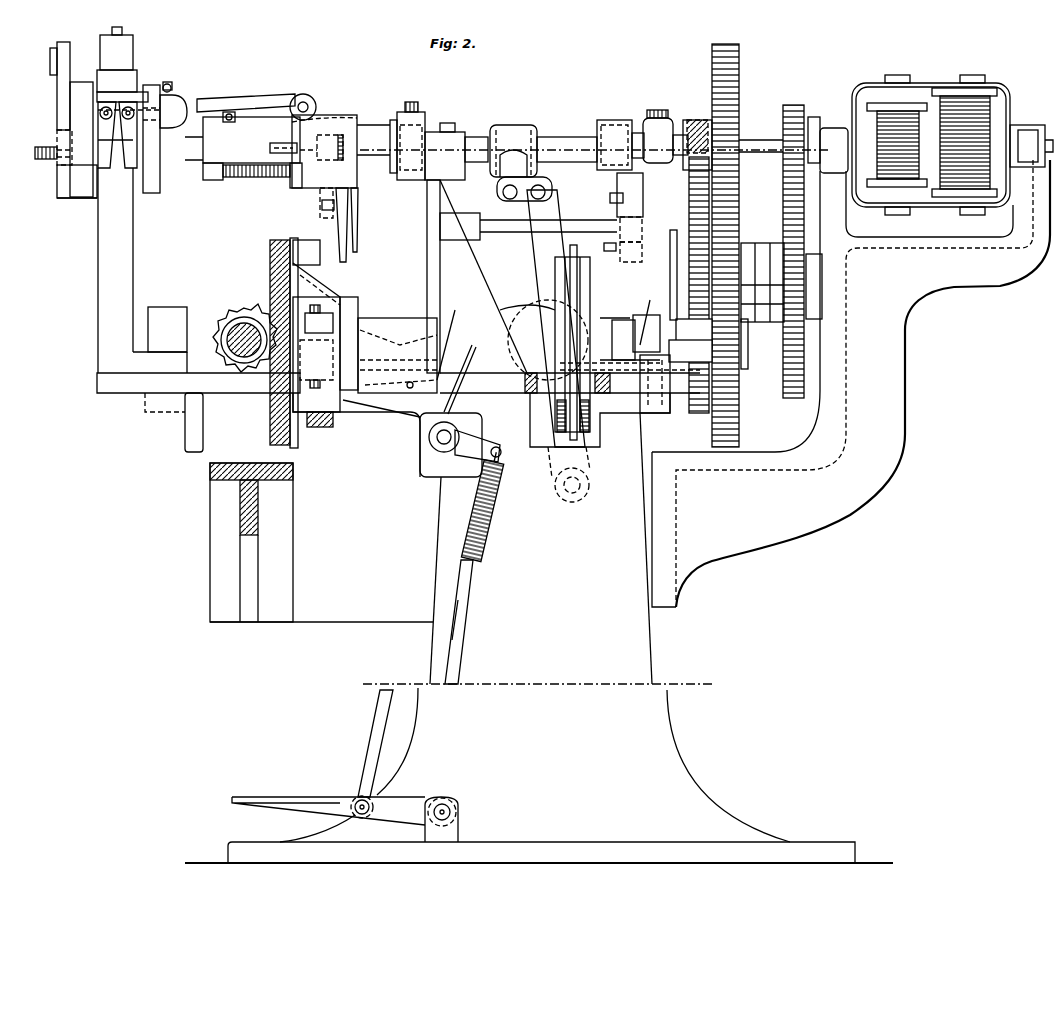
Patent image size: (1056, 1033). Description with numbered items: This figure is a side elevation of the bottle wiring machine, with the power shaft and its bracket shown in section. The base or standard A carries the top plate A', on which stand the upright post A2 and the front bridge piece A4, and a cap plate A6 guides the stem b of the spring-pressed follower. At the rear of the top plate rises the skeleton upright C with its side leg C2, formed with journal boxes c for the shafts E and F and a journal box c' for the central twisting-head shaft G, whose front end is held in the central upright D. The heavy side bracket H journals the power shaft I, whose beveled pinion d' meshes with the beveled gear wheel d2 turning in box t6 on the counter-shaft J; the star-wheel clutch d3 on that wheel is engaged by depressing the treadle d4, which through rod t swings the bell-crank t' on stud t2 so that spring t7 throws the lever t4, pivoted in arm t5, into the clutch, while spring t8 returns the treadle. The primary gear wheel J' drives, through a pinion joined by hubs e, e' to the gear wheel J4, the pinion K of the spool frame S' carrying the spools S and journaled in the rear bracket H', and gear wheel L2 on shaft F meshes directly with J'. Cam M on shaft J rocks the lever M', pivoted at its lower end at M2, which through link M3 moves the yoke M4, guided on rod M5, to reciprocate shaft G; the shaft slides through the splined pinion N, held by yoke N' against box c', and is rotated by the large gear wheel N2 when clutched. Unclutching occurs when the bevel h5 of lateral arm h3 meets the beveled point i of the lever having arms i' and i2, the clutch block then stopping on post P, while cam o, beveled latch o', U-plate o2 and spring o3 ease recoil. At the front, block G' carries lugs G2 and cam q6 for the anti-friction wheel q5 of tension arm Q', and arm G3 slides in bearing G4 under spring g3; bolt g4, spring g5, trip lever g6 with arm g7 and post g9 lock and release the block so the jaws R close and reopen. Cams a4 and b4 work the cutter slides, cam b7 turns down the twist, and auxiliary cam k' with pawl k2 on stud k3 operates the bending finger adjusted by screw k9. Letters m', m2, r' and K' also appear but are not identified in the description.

The base or standard A is at (539, 628).
The top or head plate A' is at (356, 435).
The upright post A2 is at (398, 290).
The front bridge piece A4 is at (122, 86).
The cap plate A6 is at (130, 51).
The stem of follower b is at (112, 33).
The cam b4 is at (136, 139).
The cam b7 is at (180, 96).
The auxiliary cam k' is at (59, 164).
The pawl k2 is at (69, 92).
The stud k3 is at (56, 62).
The screw k9 is at (40, 150).
The cam a4 is at (117, 135).
The bracket m' is at (77, 208).
The pin m2 is at (115, 159).
The upper tension arm Q' is at (246, 94).
The anti-friction wheel q5 is at (306, 99).
The cam q6 is at (348, 116).
The jaws R is at (242, 137).
The pin r' is at (289, 146).
The block G' is at (324, 151).
The beveled arms or lugs G2 is at (373, 140).
The arm G3 is at (252, 178).
The bearing G4 is at (211, 182).
The coiled spring g3 is at (286, 182).
The sliding bolt g4 is at (320, 208).
The spring g5 is at (361, 220).
The trip lever g6 is at (334, 225).
The arm g7 is at (317, 205).
The post g9 is at (298, 243).
The shaft F is at (375, 125).
The side leg C2 is at (442, 141).
The yoke M4 is at (513, 139).
The link M3 is at (516, 190).
The twisting head shaft G is at (595, 132).
The shaft E is at (597, 128).
The journal boxes c is at (665, 129).
The journal box c' is at (619, 195).
The yoke N' is at (697, 132).
The large gear wheel N2 is at (689, 230).
The pinion N is at (761, 155).
The gear wheel L2 is at (735, 245).
The pinion K is at (794, 240).
The shaft end K' is at (930, 134).
The gear wheel J' is at (710, 361).
The gear wheel J4 is at (806, 332).
The counter-shaft J is at (452, 345).
The hub e is at (762, 271).
The hub e' is at (766, 271).
The spools S is at (931, 141).
The spool frame S' is at (975, 133).
The side bracket H is at (309, 507).
The rear bracket H' is at (851, 383).
The upright D is at (477, 276).
The cam M is at (554, 344).
The lever M' is at (544, 318).
The pivot M2 is at (582, 486).
The rod M5 is at (583, 220).
The cam o is at (627, 188).
The beveled latch o' is at (634, 215).
The U-plate o2 is at (606, 243).
The spring o3 is at (638, 243).
The beveled point i is at (623, 335).
The arm i' is at (527, 301).
The arm i2 is at (672, 378).
The skeleton upright C is at (646, 306).
The lateral arm h3 is at (633, 317).
The bevel h5 is at (640, 319).
The post P is at (630, 337).
The beveled pinion d' is at (235, 332).
The beveled gear wheel d2 is at (272, 343).
The clutch d3 is at (335, 349).
The treadle d4 is at (345, 805).
The power shaft I is at (243, 310).
The rod t is at (417, 678).
The bell-crank t' is at (478, 446).
The stud t2 is at (435, 438).
The lever t4 is at (381, 415).
The arm t5 is at (397, 355).
The box t6 is at (319, 284).
The spring t7 is at (460, 373).
The spring t8 is at (487, 506).